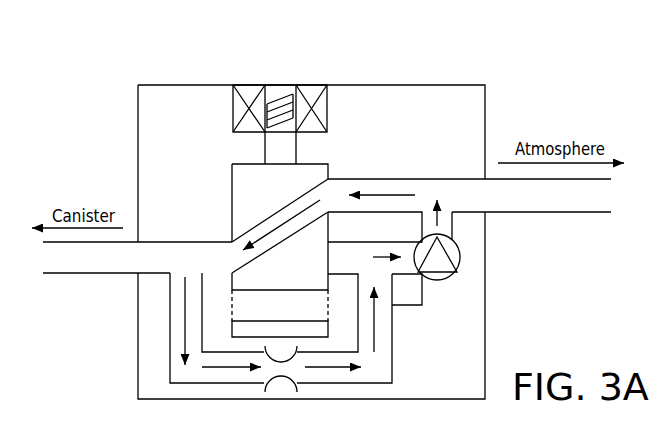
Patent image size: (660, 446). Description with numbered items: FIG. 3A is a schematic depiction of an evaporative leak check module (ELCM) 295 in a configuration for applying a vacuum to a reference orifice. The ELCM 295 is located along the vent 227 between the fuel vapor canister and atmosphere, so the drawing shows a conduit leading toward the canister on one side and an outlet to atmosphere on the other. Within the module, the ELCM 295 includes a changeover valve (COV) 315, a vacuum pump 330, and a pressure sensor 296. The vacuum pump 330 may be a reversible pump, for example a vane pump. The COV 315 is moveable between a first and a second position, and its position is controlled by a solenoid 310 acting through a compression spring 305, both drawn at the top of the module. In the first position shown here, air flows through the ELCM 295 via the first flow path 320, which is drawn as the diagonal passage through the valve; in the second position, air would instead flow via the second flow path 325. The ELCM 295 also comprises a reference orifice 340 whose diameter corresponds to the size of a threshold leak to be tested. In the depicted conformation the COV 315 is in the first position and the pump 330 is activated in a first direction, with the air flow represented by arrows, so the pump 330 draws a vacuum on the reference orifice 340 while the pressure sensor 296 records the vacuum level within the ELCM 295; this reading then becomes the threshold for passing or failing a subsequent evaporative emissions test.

The vent 227 is at (92, 274).
The evaporative leak check module 295 is at (172, 84).
The pressure sensor 296 is at (422, 305).
The compression spring 305 is at (282, 84).
The solenoid 310 is at (310, 84).
The changeover valve 315 is at (243, 163).
The first flow path 320 is at (285, 205).
The second flow path 325 is at (320, 287).
The vacuum pump 330 is at (453, 273).
The reference orifice 340 is at (299, 374).